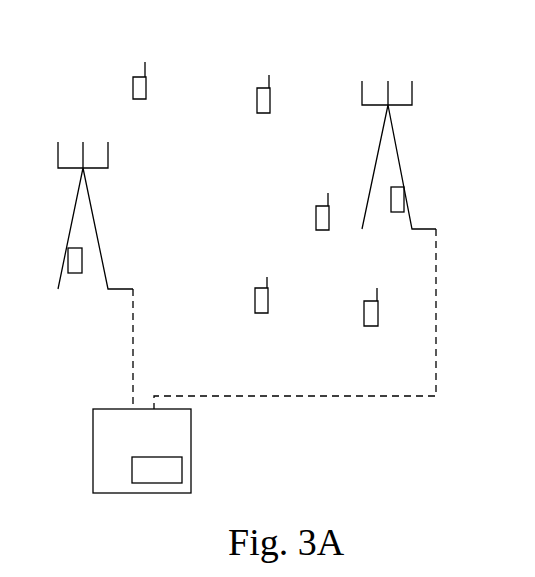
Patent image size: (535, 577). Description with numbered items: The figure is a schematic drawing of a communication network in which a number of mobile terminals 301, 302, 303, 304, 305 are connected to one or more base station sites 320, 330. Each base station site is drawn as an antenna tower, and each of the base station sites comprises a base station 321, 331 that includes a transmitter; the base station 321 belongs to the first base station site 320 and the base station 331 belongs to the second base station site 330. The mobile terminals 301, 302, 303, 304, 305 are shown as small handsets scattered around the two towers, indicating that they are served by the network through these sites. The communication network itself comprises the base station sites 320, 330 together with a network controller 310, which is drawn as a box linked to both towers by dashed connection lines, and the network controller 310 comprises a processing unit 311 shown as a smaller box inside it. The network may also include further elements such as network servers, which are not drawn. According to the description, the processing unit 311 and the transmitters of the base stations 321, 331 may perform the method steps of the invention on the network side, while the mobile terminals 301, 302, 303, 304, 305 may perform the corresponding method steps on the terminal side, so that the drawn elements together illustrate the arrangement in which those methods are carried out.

The mobile terminal 301 is at (138, 100).
The mobile terminal 302 is at (260, 314).
The mobile terminal 303 is at (370, 327).
The mobile terminal 304 is at (262, 114).
The mobile terminal 305 is at (321, 231).
The network controller 310 is at (142, 451).
The processing unit 311 is at (157, 470).
The base station site 320 is at (78, 131).
The base station 321 is at (67, 254).
The base station site 330 is at (357, 76).
The base station 331 is at (404, 191).